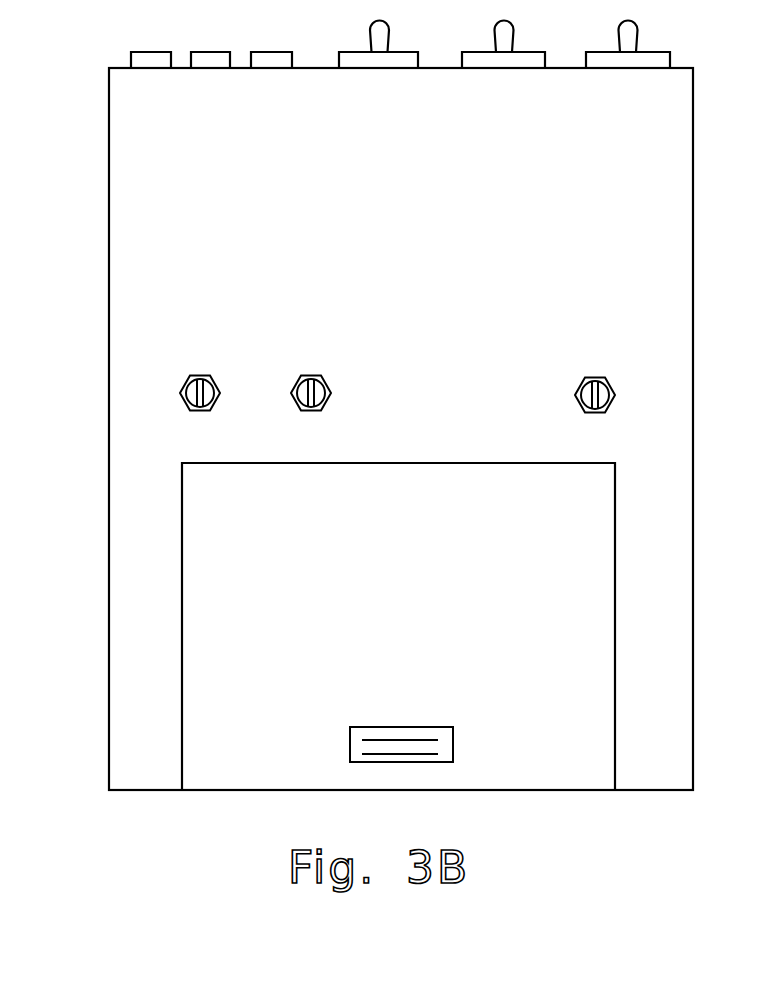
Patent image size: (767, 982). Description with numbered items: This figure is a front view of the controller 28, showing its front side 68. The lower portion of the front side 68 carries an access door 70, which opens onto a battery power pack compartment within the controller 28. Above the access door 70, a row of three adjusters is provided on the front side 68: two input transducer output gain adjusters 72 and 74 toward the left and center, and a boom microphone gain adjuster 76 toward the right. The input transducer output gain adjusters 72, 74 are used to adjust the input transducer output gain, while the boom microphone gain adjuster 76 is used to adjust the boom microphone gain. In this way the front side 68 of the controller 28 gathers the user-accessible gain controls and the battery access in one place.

The controller 28 is at (109, 349).
The front side 68 is at (608, 179).
The access door 70 is at (537, 547).
The input transducer output gain adjuster 72 is at (200, 375).
The input transducer output gain adjuster 74 is at (311, 375).
The boom microphone gain adjuster 76 is at (595, 377).